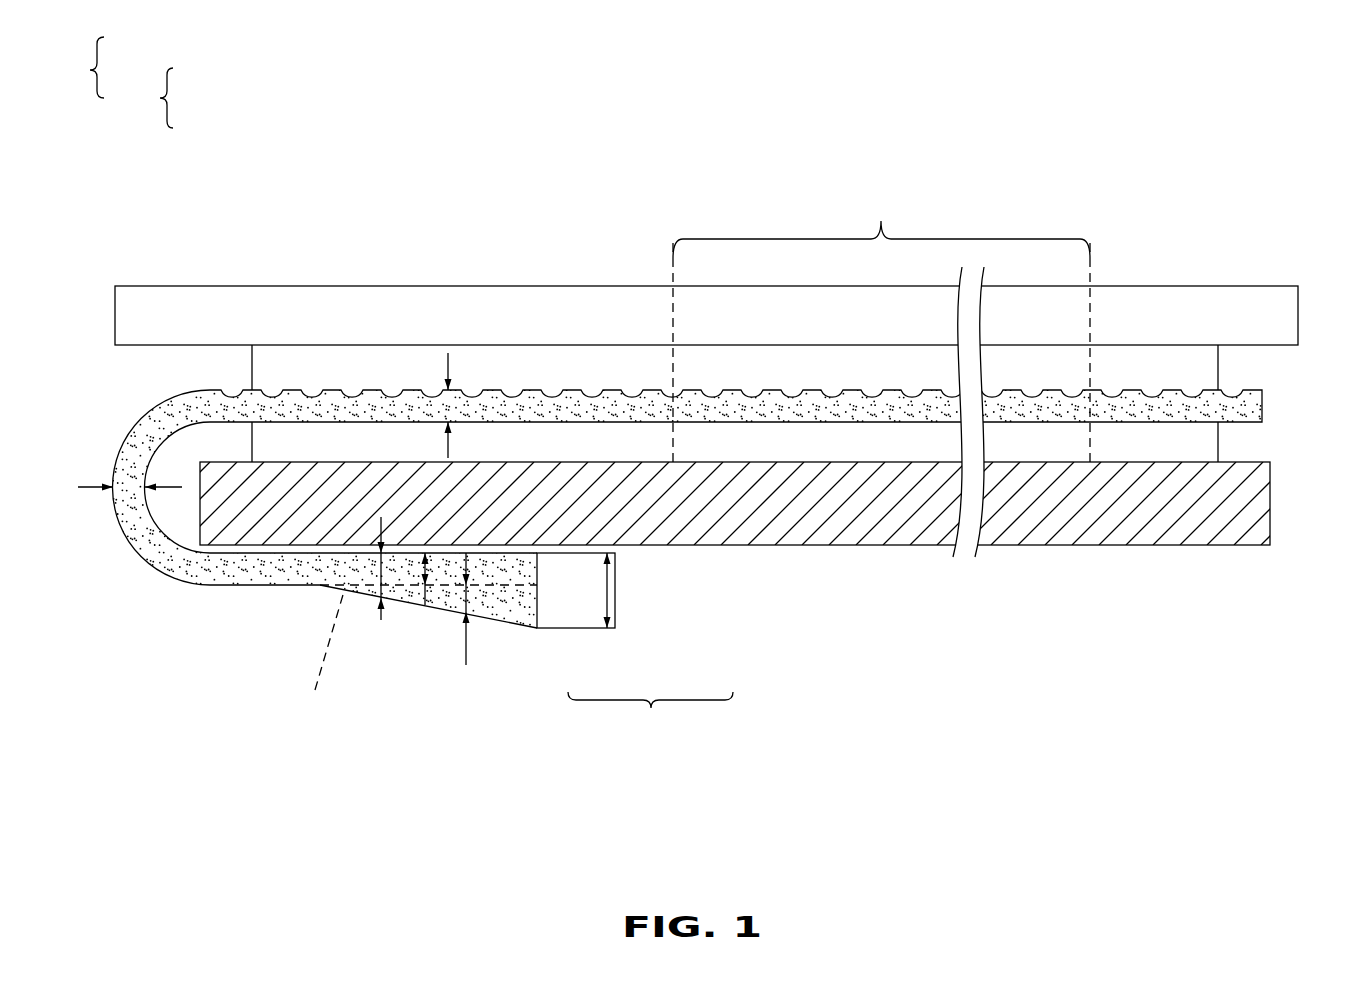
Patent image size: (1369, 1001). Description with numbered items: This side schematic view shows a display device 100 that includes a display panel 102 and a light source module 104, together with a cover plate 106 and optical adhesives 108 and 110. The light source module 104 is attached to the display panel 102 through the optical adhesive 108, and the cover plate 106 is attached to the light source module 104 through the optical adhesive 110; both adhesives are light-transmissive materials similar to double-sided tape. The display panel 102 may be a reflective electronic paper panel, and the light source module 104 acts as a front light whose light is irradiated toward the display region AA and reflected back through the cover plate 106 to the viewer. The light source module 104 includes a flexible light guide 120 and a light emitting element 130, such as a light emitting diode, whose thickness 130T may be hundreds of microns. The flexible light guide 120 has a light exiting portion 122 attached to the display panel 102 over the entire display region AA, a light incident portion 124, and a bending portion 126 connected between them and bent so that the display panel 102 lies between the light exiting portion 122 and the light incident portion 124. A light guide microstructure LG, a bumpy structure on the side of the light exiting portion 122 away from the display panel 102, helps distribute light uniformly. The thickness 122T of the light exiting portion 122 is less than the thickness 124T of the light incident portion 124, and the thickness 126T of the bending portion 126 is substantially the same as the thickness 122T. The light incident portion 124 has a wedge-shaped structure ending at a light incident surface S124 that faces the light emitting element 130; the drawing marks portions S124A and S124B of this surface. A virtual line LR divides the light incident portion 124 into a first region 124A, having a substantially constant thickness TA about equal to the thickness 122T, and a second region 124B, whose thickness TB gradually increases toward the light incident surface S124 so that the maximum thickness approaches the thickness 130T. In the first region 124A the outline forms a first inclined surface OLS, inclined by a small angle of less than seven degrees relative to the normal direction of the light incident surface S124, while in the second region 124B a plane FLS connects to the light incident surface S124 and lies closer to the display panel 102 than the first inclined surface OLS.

The display device 100 is at (1316, 805).
The display panel 102 is at (1255, 508).
The light source module 104 is at (109, 82).
The cover plate 106 is at (1299, 318).
The optical adhesive 108 is at (1200, 444).
The optical adhesive 110 is at (1200, 374).
The flexible light guide 120 is at (685, 354).
The light exiting portion 122 is at (510, 395).
The thickness of light exiting portion 122T is at (432, 395).
The light incident portion 124 is at (561, 728).
The first region 124A is at (488, 573).
The second region 124B is at (510, 608).
The thickness of light incident portion 124T is at (430, 557).
The bending portion 126 is at (170, 400).
The thickness of bending portion 126T is at (128, 493).
The light emitting element 130 is at (612, 606).
The thickness of light emitting element 130T is at (612, 578).
The display region AA is at (881, 324).
The light guide microstructure LG is at (590, 397).
The thickness in first region TA is at (380, 560).
The thickness in second region TB is at (461, 623).
The plane FLS is at (450, 553).
The first inclined surface OLS is at (377, 597).
The virtual line LR is at (322, 659).
The first side surface S124A is at (537, 573).
The second side surface S124B is at (537, 608).
The light incident surface S124 is at (650, 717).